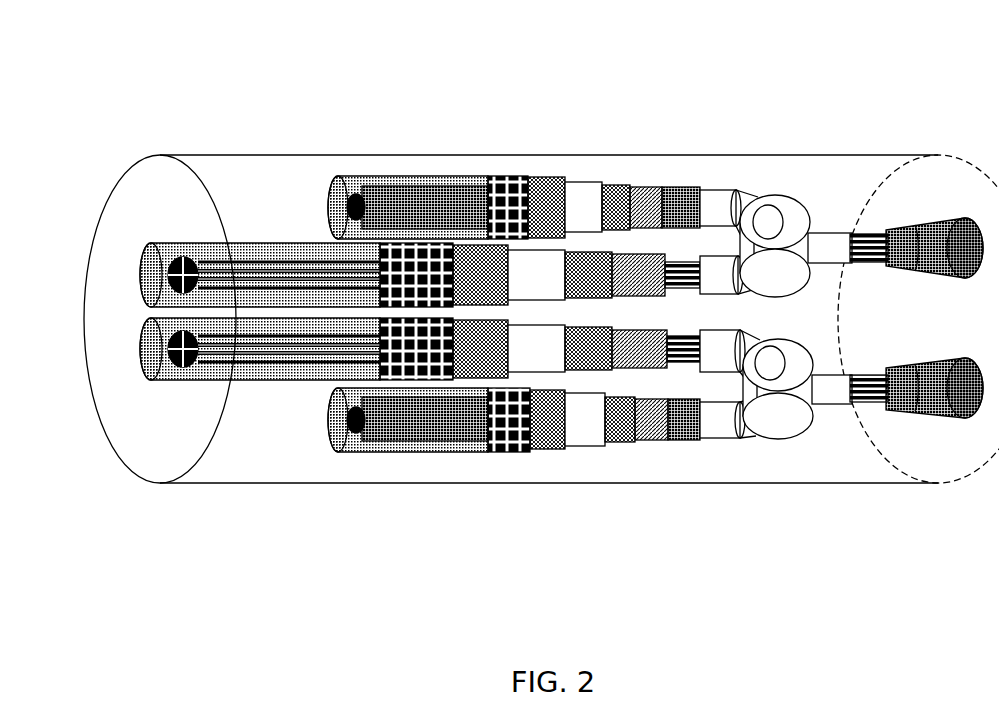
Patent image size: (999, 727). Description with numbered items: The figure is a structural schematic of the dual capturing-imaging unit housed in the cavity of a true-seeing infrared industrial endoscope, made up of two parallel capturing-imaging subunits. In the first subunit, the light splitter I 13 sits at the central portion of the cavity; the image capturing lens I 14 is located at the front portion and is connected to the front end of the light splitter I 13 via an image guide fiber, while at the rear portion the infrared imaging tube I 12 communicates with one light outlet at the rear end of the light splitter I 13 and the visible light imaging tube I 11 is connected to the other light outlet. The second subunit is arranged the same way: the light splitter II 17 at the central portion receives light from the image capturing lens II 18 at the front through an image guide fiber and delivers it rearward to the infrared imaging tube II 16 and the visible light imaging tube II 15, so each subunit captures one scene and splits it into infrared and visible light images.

The visible light imaging tube I 11 is at (278, 230).
The infrared imaging tube I 12 is at (575, 176).
The light splitter I 13 is at (793, 195).
The image capturing lens I 14 is at (938, 217).
The visible light imaging tube II 15 is at (278, 397).
The infrared imaging tube II 16 is at (575, 452).
The light splitter II 17 is at (793, 443).
The image capturing lens II 18 is at (938, 420).